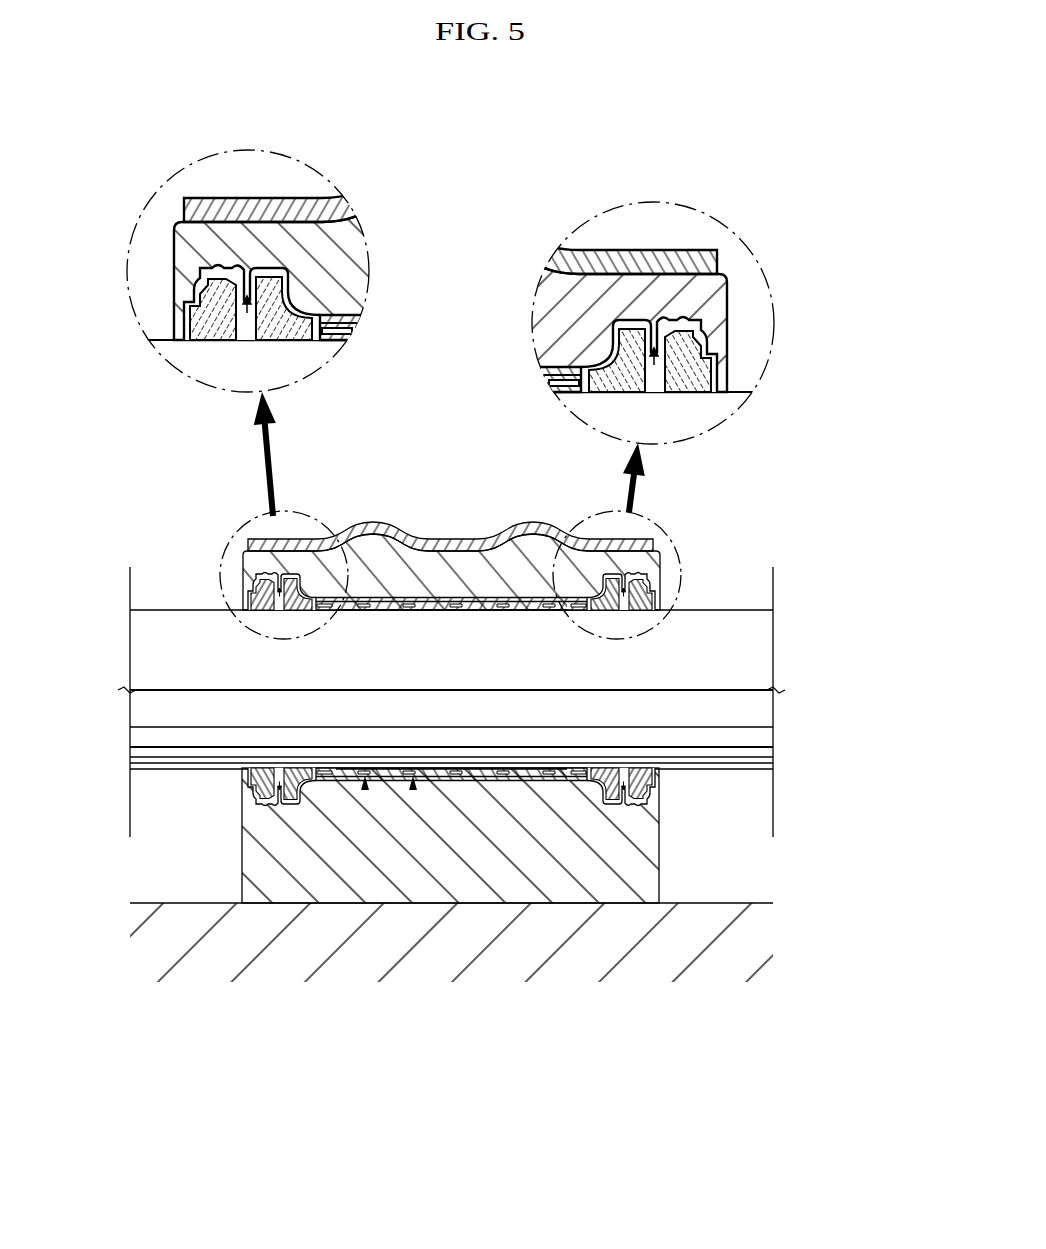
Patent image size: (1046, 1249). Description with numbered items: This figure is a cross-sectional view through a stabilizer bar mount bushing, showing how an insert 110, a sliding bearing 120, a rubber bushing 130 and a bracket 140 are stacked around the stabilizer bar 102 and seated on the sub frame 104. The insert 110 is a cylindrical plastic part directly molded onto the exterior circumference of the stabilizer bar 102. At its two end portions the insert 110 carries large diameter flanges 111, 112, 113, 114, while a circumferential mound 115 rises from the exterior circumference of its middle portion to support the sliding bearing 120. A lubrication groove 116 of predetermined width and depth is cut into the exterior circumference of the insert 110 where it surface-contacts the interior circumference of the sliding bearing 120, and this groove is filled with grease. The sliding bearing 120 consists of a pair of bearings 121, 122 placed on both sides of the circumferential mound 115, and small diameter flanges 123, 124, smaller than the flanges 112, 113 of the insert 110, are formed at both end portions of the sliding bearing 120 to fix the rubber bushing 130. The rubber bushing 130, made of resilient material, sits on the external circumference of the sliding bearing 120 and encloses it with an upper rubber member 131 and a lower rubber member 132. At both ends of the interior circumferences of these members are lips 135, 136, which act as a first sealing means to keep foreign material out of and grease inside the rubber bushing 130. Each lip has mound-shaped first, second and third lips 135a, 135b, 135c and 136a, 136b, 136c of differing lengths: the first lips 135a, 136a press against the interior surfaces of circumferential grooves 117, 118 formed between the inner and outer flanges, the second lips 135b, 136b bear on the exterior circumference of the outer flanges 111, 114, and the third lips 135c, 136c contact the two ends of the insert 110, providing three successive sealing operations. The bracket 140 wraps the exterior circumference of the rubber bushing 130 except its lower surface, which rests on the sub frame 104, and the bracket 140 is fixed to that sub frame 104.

The stabilizer bar 102 is at (218, 710).
The sub frame 104 is at (295, 938).
The insert 110 is at (505, 773).
The large diameter flange 111 is at (208, 340).
The large diameter flange 112 is at (278, 340).
The large diameter flange 113 is at (613, 388).
The large diameter flange 114 is at (690, 393).
The circumferential mound 115 is at (448, 783).
The lubrication groove 116 is at (413, 790).
The circumferential groove 117 is at (252, 340).
The circumferential groove 118 is at (653, 393).
The sliding bearing 120 is at (451, 525).
The bearing 121 is at (438, 478).
The bearing 122 is at (453, 580).
The small diameter flange 123 is at (323, 578).
The small diameter flange 124 is at (580, 572).
The rubber bushing 130 is at (523, 348).
The upper rubber member 131 is at (527, 553).
The lower rubber member 132 is at (565, 862).
The lip 135 is at (477, 225).
The first lip 135a is at (257, 262).
The second lip 135b is at (216, 272).
The third lip 135c is at (152, 322).
The lip 136 is at (419, 263).
The first lip 136a is at (652, 318).
The second lip 136b is at (712, 318).
The third lip 136c is at (747, 330).
The bracket 140 is at (473, 542).